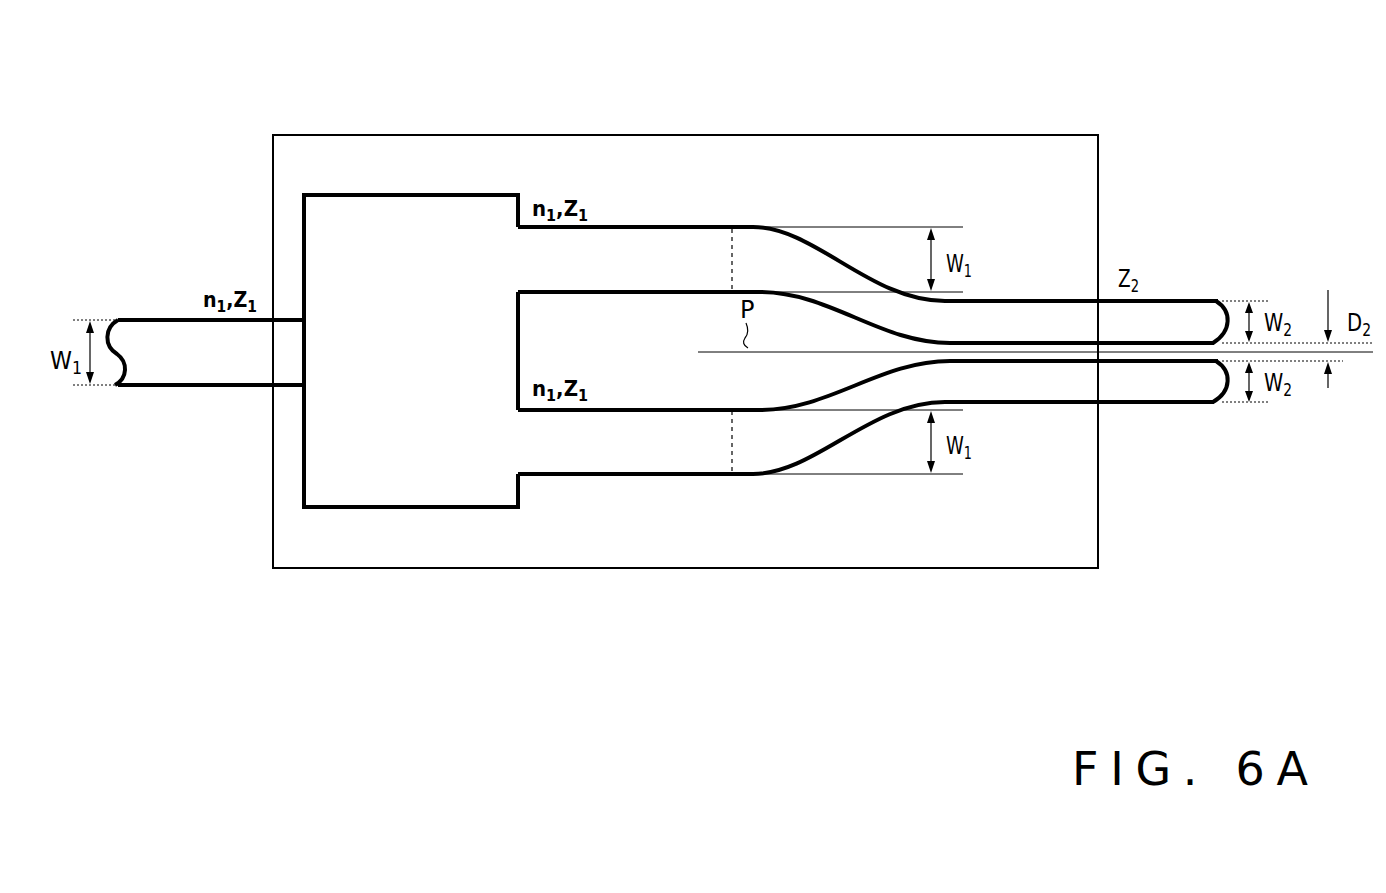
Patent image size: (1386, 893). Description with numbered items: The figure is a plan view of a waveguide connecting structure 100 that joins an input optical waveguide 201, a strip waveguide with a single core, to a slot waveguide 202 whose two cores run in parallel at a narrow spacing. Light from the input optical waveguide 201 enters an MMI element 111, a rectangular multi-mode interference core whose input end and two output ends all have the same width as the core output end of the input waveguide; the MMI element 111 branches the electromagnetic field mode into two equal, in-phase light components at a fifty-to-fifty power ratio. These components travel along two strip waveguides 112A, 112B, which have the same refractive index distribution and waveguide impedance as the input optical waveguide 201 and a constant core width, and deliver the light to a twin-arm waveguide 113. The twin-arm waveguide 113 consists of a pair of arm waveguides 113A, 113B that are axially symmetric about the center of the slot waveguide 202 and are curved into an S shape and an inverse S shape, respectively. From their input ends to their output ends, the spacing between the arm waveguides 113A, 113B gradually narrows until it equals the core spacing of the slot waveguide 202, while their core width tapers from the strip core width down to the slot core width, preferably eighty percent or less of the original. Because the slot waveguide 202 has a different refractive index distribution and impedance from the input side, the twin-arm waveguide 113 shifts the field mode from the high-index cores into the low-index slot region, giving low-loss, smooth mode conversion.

The waveguide connecting structure 100 is at (1010, 135).
The MMI element 111 is at (343, 193).
The strip waveguide 112A is at (615, 227).
The strip waveguide 112B is at (668, 410).
The twin-arm waveguide 113 is at (950, 59).
The arm waveguide 113A is at (803, 243).
The arm waveguide 113B is at (867, 370).
The input optical waveguide 201 is at (147, 317).
The slot waveguide 202 is at (1187, 300).